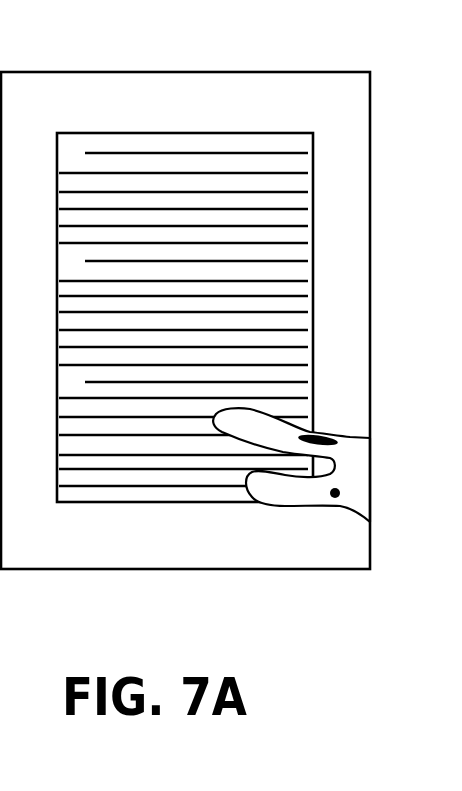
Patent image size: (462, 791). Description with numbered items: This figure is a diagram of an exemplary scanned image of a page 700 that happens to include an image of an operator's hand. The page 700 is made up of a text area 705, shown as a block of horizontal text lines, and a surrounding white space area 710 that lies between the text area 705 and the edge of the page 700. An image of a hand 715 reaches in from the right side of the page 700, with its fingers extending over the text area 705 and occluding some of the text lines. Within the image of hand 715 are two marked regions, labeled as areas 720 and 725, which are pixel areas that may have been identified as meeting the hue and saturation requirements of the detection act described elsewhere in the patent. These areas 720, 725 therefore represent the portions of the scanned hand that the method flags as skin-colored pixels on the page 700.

The page 700 is at (387, 55).
The text area 705 is at (313, 150).
The white space area 710 is at (348, 218).
The image of a hand 715 is at (273, 503).
The area 720 is at (335, 499).
The area 725 is at (320, 435).